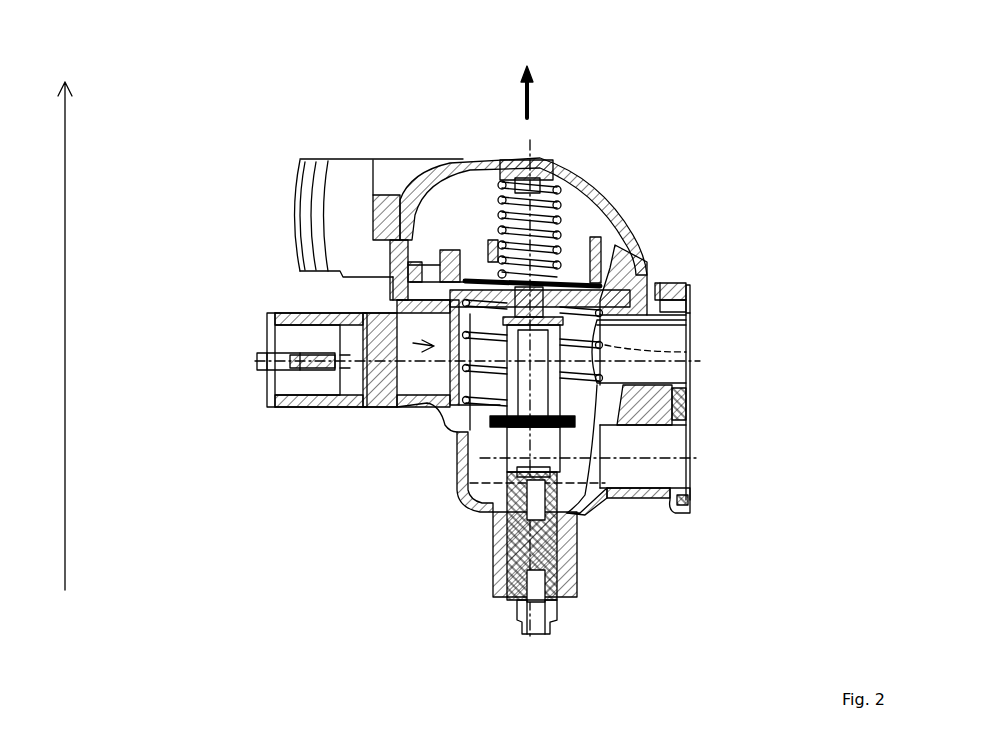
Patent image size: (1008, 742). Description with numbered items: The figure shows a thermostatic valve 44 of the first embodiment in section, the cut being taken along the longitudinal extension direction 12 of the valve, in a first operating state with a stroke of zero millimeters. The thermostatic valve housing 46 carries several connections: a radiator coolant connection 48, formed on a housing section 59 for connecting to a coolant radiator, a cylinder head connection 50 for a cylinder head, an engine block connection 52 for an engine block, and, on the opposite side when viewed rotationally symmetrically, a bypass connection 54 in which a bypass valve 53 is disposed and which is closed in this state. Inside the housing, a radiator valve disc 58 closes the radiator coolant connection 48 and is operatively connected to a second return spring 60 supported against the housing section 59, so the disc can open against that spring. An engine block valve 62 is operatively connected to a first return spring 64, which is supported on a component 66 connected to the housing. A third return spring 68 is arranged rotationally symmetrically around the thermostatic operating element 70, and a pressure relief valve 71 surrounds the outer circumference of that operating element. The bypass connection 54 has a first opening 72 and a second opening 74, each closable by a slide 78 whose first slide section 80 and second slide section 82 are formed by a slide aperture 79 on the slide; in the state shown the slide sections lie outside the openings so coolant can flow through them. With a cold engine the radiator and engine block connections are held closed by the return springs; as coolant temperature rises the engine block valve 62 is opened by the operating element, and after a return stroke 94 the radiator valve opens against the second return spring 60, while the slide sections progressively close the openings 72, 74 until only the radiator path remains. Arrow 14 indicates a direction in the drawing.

The longitudinal extension direction 12 is at (51, 336).
The flow direction arrow 14 is at (506, 92).
The thermostatic valve 44 is at (650, 139).
The thermostatic valve housing 46 is at (447, 420).
The radiator coolant connection 48 is at (303, 178).
The cylinder head connection 50 is at (727, 355).
The engine block connection 52 is at (735, 474).
The bypass valve 53 is at (268, 315).
The bypass connection 54 is at (222, 356).
The radiator valve disc 58 is at (646, 272).
The housing section 59 is at (530, 155).
The second return spring 60 is at (577, 212).
The engine block valve 62 is at (517, 553).
The first return spring 64 is at (694, 292).
The component 66 is at (613, 418).
The third return spring 68 is at (668, 285).
The thermostatic operating element 70 is at (692, 335).
The pressure relief valve 71 is at (691, 395).
The first opening 72 is at (470, 258).
The second opening 74 is at (308, 404).
The slide 78 is at (288, 313).
The slide aperture 79 is at (648, 523).
The first slide section 80 is at (397, 317).
The second slide section 82 is at (400, 410).
The return stroke 94 is at (484, 245).